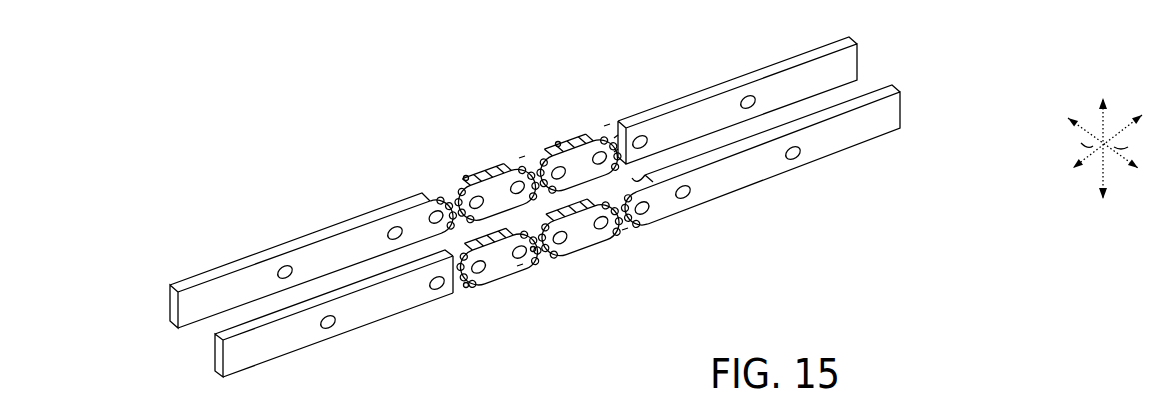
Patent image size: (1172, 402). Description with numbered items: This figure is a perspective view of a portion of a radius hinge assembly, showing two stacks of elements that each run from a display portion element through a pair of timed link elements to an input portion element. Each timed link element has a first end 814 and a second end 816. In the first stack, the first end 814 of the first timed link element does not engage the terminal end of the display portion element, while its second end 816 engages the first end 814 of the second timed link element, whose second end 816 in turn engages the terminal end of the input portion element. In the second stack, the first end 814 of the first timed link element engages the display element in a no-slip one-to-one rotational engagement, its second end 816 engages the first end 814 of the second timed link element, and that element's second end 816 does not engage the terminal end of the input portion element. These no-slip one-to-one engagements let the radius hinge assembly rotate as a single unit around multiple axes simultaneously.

The first end 814 is at (465, 176).
The second end 816 is at (521, 156).